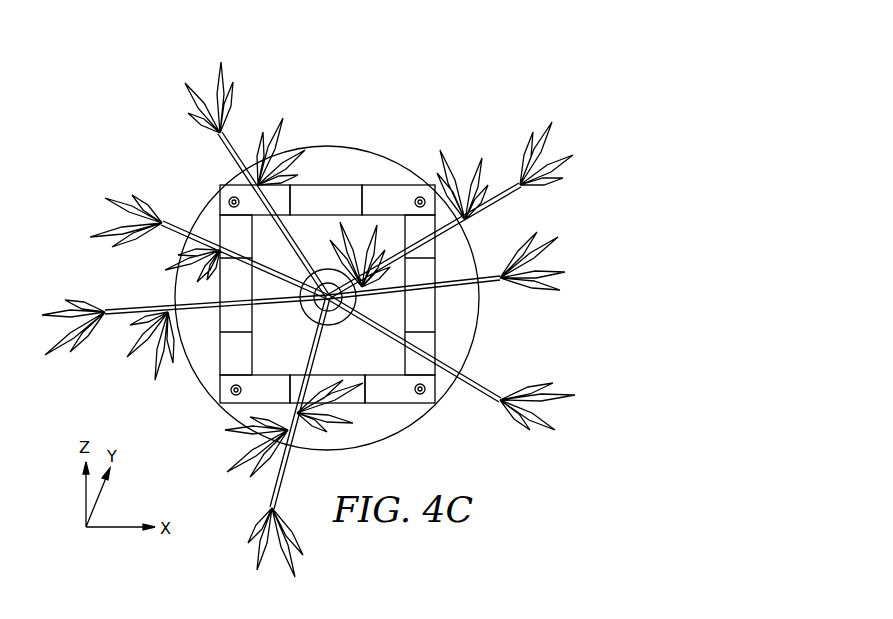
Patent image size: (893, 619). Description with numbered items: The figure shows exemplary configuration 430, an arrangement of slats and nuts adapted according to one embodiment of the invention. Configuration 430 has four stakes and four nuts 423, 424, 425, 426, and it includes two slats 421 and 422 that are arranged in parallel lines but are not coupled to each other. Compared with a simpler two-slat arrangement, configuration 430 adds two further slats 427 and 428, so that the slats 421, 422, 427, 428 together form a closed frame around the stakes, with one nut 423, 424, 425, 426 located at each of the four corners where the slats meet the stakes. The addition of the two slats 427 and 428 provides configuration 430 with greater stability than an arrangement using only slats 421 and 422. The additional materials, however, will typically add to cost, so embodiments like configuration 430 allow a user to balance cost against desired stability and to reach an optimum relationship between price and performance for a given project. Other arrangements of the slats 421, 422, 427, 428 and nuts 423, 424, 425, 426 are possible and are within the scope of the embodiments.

The slat 421 is at (425, 305).
The slat 422 is at (227, 277).
The nut 423 is at (228, 200).
The nut 424 is at (420, 196).
The nut 425 is at (231, 393).
The nut 426 is at (437, 401).
The slat 427 is at (331, 192).
The slat 428 is at (329, 378).
The configuration 430 is at (413, 121).